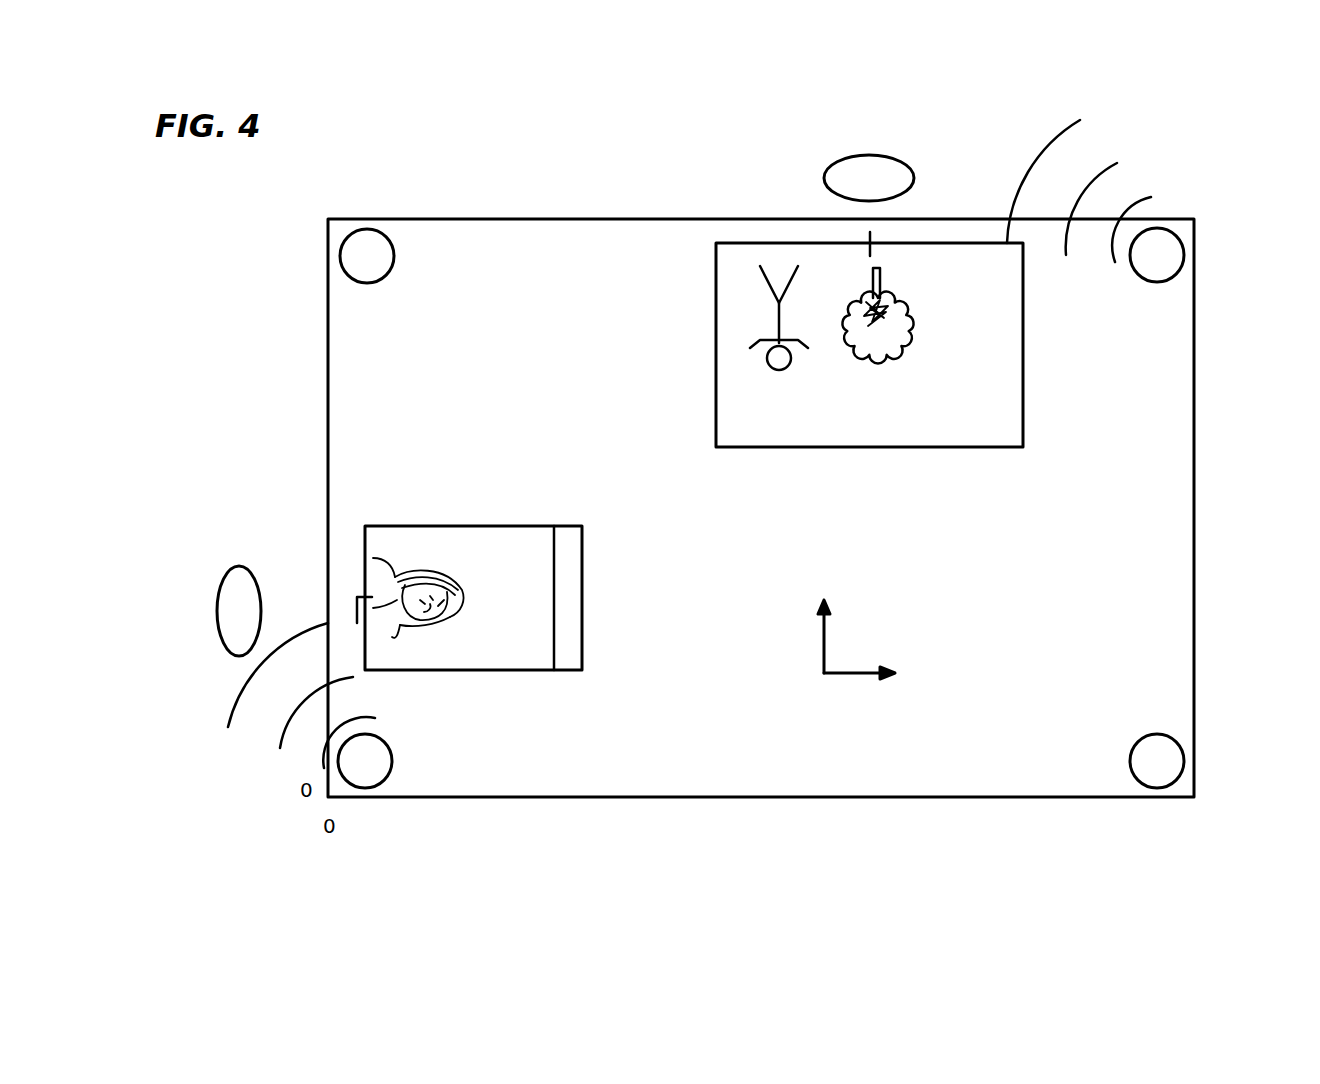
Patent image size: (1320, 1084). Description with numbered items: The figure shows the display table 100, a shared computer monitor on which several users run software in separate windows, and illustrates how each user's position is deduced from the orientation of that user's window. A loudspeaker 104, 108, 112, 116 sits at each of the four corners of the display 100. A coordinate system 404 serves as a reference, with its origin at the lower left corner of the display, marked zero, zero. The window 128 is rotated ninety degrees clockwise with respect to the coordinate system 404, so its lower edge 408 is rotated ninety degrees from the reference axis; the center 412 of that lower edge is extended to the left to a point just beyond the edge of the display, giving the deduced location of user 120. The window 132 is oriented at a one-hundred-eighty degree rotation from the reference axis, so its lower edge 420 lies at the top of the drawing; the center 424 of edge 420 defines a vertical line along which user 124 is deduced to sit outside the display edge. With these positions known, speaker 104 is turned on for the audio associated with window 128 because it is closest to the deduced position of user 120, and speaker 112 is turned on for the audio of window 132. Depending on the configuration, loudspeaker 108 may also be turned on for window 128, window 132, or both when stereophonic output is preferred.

The display table 100 is at (797, 760).
The loudspeaker 104 is at (392, 765).
The loudspeaker 108 is at (367, 284).
The loudspeaker 112 is at (1153, 282).
The loudspeaker 116 is at (1157, 733).
The user 120 is at (239, 565).
The user 124 is at (887, 153).
The window 128 is at (473, 526).
The window 132 is at (713, 273).
The coordinate system 404 is at (772, 662).
The lower edge of the window 408 is at (363, 572).
The center of the lower edge 412 is at (357, 623).
The edge 420 is at (800, 243).
The center 424 is at (877, 237).